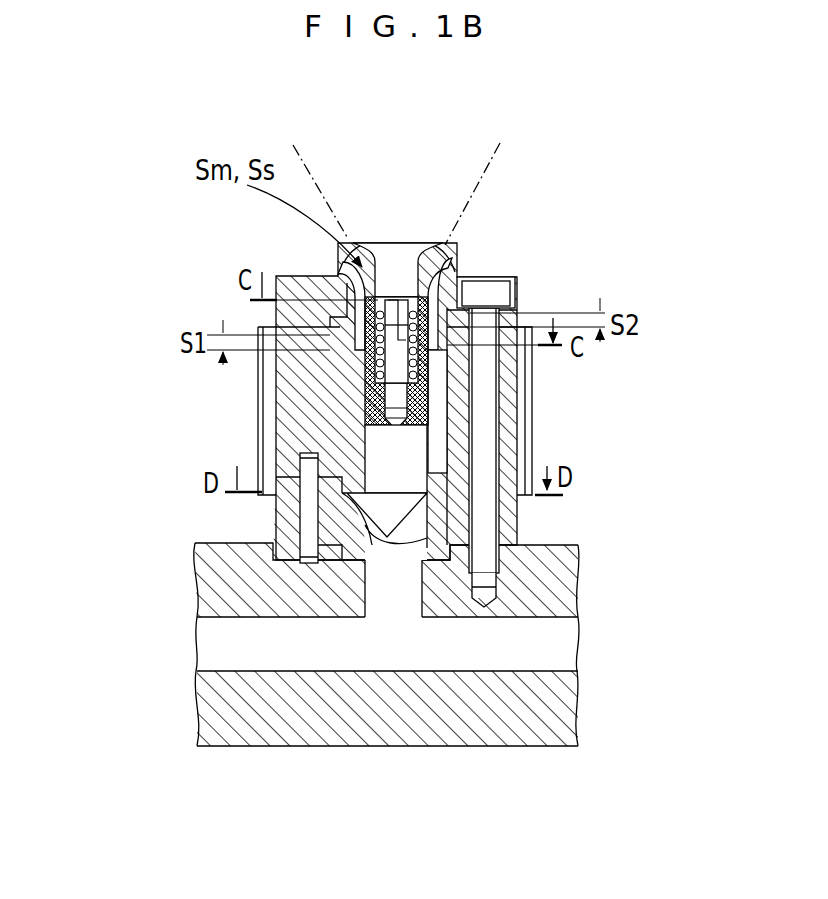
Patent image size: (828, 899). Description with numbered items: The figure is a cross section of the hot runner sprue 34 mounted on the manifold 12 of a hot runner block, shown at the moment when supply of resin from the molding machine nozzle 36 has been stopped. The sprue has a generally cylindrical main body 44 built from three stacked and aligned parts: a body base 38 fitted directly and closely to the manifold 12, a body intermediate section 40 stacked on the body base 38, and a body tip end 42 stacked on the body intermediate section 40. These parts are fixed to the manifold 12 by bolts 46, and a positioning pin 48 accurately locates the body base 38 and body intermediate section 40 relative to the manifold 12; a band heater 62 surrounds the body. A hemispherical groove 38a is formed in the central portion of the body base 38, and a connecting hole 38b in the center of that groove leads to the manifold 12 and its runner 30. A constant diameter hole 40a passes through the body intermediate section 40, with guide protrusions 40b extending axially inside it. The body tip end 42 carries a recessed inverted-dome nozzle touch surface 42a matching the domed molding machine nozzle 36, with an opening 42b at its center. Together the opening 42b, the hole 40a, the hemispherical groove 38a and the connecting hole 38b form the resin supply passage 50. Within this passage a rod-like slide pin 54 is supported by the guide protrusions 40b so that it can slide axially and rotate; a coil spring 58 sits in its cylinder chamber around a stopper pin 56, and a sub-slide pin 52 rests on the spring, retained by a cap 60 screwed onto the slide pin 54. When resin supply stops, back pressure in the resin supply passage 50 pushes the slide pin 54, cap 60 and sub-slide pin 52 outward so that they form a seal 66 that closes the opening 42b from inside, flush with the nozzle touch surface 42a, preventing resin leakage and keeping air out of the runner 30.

The manifold 12 is at (580, 590).
The runner 30 is at (548, 652).
The hot runner sprue 34 is at (355, 462).
The molding machine nozzle 36 is at (485, 172).
The body base 38 is at (276, 530).
The hemispherical groove 38a is at (380, 530).
The connecting hole 38b is at (420, 548).
The body intermediate section 40 is at (320, 392).
The constant diameter hole 40a is at (455, 402).
The guide protrusions 40b is at (372, 433).
The body tip end 42 is at (285, 274).
The nozzle touch surface 42a is at (395, 262).
The opening 42b is at (378, 263).
The main body 44 is at (165, 400).
The bolts 46 is at (517, 278).
The positioning pin 48 is at (300, 552).
The resin supply passage 50 is at (440, 505).
The sub-slide pin 52 is at (420, 245).
The slide pin 54 is at (428, 434).
The stopper pin 56 is at (365, 405).
The coil spring 58 is at (428, 372).
The cap 60 is at (450, 268).
The band heater 62 is at (258, 380).
The seal 66 is at (403, 244).